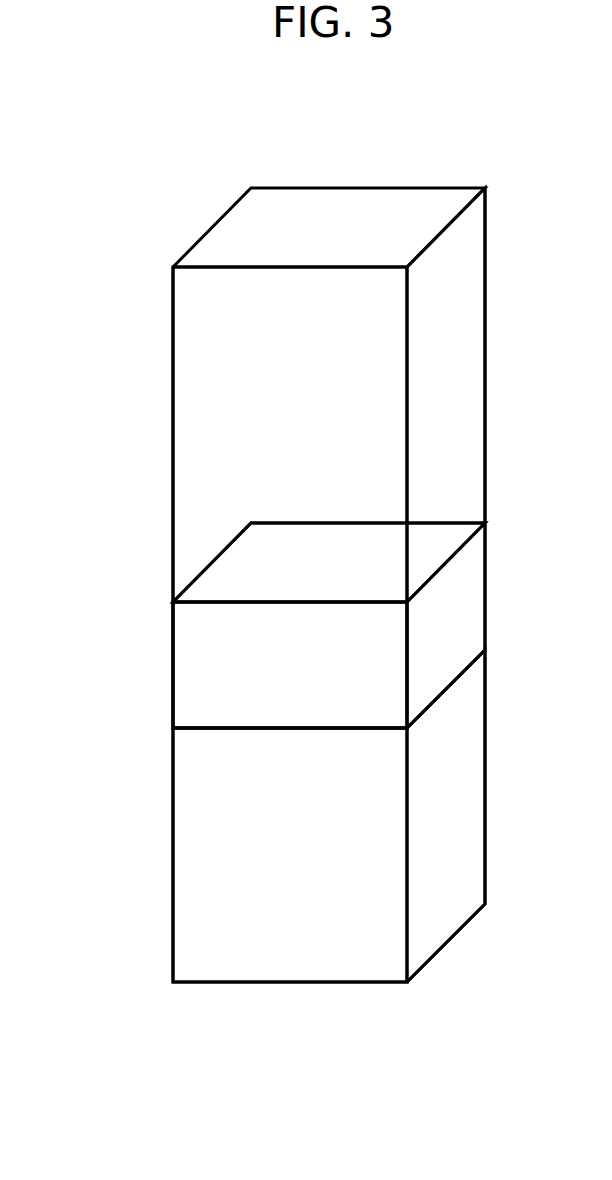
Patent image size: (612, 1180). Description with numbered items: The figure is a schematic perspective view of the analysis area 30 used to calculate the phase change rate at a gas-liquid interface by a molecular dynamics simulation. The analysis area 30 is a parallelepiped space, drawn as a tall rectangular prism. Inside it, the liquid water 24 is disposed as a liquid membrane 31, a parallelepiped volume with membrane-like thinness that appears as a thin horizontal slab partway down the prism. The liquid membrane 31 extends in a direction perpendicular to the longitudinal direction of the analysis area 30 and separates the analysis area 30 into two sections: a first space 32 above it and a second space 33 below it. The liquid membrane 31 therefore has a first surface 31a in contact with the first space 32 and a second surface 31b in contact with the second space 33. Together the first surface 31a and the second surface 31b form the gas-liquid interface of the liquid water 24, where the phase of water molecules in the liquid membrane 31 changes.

The analysis area 30 is at (352, 218).
The first space 32 is at (367, 420).
The liquid membrane 31 is at (448, 632).
The first surface 31a is at (268, 568).
The liquid water 24 is at (198, 643).
The second surface 31b is at (245, 722).
The second space 33 is at (377, 886).